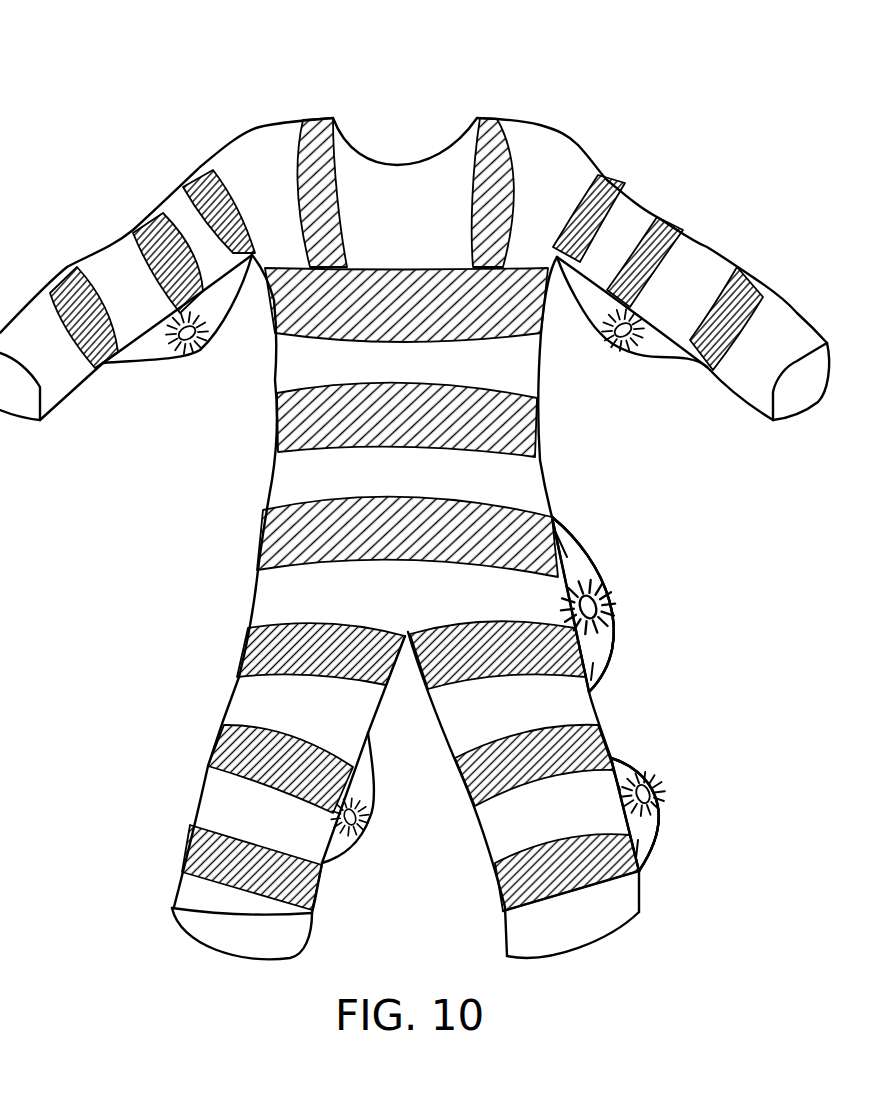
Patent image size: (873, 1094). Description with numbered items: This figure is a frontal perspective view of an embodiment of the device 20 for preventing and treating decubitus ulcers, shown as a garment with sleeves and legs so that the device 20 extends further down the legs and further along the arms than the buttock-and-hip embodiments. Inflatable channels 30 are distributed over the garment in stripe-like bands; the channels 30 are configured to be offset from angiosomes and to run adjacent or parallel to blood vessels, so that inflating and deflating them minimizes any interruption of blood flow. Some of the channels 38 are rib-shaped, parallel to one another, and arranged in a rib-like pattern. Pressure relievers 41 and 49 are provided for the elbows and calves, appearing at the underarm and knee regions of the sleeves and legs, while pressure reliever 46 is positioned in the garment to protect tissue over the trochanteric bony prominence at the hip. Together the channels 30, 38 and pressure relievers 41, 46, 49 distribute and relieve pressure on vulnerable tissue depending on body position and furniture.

The device 20 is at (414, 483).
The channels 30 is at (585, 577).
The channels 38 is at (610, 603).
The pressure reliever 41 is at (197, 356).
The pressure reliever 46 is at (607, 640).
The pressure reliever 49 is at (365, 832).